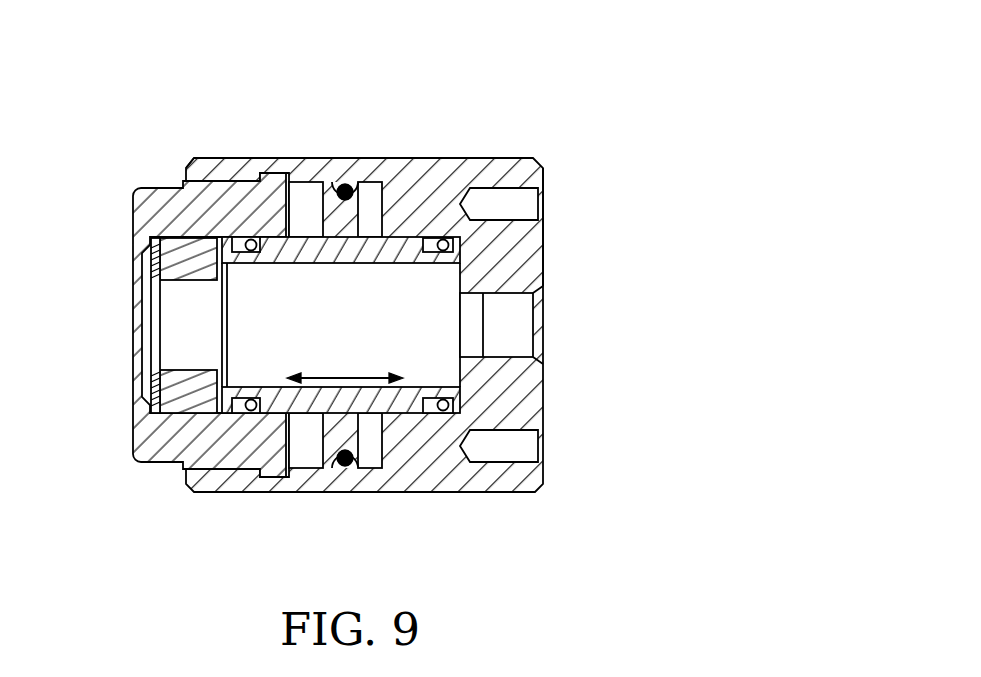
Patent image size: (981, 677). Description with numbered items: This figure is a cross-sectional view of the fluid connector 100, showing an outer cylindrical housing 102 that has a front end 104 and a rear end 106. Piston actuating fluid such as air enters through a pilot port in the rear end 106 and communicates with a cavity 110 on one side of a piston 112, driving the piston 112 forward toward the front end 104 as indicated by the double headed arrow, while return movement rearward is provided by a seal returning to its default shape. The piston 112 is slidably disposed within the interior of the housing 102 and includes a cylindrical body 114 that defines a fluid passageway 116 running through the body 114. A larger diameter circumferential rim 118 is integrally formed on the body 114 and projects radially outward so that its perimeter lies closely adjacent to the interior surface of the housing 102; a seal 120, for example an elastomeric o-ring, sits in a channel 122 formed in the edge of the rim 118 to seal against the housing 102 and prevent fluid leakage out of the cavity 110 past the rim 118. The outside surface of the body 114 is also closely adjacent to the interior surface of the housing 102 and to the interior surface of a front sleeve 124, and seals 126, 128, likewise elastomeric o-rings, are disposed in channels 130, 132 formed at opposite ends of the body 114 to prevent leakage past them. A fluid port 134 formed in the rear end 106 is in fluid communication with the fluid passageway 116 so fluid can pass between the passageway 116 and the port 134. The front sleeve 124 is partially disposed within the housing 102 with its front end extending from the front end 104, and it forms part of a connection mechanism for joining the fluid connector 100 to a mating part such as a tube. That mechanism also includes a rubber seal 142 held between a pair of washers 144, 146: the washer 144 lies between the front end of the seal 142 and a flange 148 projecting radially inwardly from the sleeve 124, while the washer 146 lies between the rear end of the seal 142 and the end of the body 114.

The fluid connector 100 is at (664, 95).
The outer cylindrical housing 102 is at (411, 180).
The front end 104 is at (186, 169).
The rear end 106 is at (531, 170).
The cavity 110 is at (414, 447).
The piston 112 is at (323, 182).
The cylindrical body 114 is at (320, 254).
The fluid passageway 116 is at (427, 348).
The circumferential rim 118 is at (348, 183).
The seal 120 is at (362, 447).
The channel 122 is at (340, 463).
The front sleeve 124 is at (150, 203).
The seal 126 is at (442, 238).
The seal 128 is at (250, 413).
The channel 130 is at (428, 239).
The channel 132 is at (241, 237).
The fluid port 134 is at (518, 328).
The seal 142 is at (192, 387).
The washer 144 is at (143, 253).
The washer 146 is at (226, 262).
The flange 148 is at (141, 408).